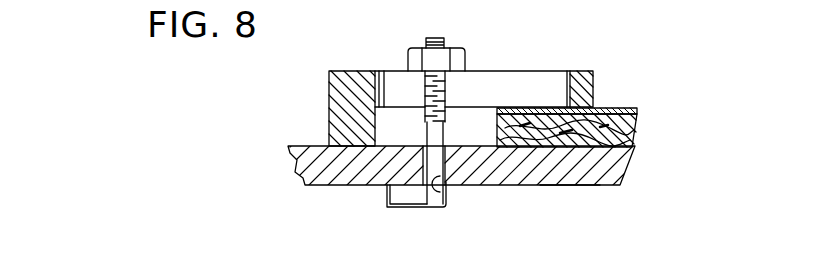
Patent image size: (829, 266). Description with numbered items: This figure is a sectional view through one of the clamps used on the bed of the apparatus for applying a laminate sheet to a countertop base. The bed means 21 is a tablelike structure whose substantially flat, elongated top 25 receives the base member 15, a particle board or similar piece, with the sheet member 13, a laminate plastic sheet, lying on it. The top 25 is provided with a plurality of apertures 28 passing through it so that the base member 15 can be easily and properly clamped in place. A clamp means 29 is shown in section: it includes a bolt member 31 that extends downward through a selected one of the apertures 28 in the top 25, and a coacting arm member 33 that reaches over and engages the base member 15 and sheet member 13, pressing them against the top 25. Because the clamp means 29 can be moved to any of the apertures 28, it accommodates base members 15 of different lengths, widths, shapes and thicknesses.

The sheet member 13 is at (622, 108).
The base member 15 is at (626, 129).
The bed means 21 is at (623, 169).
The top 25 is at (570, 181).
The apertures 28 is at (446, 196).
The clamp means 29 is at (329, 112).
The bolt member 31 is at (444, 40).
The arm member 33 is at (379, 51).